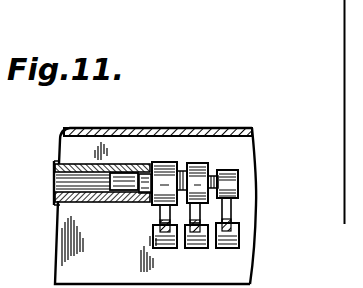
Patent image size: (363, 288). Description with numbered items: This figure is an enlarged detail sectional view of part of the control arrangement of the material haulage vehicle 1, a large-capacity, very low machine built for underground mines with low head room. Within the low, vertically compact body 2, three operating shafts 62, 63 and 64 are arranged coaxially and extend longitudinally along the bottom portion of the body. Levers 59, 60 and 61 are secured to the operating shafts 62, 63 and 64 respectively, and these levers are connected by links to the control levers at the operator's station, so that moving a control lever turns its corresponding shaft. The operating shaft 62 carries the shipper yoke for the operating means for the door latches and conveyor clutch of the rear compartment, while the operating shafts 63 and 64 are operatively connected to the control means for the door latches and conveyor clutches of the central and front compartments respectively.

The material haulage vehicle 1 is at (50, 261).
The body 2 is at (254, 202).
The lever 59 is at (215, 213).
The lever 60 is at (181, 223).
The lever 61 is at (159, 210).
The operating shaft 62 is at (221, 173).
The operating shaft 63 is at (186, 172).
The operating shaft 64 is at (153, 167).